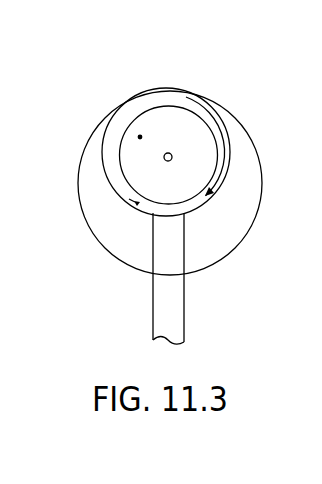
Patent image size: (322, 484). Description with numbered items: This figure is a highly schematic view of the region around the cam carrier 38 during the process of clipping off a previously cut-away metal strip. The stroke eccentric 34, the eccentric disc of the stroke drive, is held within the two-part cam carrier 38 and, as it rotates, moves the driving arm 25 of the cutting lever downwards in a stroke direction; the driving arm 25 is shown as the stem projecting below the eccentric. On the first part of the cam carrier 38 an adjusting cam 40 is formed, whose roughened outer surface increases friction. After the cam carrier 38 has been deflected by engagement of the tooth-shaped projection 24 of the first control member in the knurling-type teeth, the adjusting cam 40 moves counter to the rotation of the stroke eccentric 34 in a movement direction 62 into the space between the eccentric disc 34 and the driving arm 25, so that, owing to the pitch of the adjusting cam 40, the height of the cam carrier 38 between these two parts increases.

The tooth-shaped projection 24 is at (181, 73).
The driving arm 25 is at (175, 312).
The stroke eccentric 34 is at (128, 95).
The cam carrier 38 is at (112, 128).
The adjusting cam 40 is at (197, 222).
The movement direction 62 is at (227, 147).